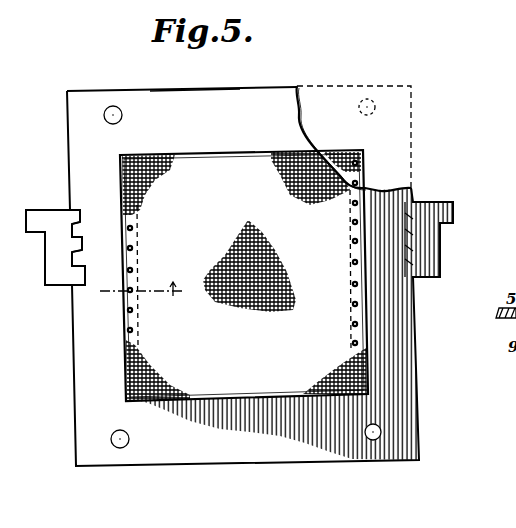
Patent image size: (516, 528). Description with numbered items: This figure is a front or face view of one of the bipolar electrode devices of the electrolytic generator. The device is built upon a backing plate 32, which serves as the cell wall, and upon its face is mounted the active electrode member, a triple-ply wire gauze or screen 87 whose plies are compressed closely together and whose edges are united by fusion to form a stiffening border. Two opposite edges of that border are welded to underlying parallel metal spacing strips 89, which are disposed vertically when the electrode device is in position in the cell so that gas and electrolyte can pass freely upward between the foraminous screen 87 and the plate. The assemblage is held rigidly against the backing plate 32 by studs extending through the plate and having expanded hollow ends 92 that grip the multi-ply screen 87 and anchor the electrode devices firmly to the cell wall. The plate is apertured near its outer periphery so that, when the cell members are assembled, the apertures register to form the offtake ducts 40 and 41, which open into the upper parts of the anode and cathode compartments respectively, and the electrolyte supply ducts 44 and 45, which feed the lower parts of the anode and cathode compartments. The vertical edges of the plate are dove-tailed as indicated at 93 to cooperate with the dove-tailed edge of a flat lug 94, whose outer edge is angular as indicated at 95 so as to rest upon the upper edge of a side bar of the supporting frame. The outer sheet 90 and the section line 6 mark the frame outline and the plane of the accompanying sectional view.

The section line 6- 6 is at (139, 292).
The backing plate 32 is at (182, 102).
The offtake duct 40 is at (113, 106).
The offtake duct 41 is at (370, 99).
The electrolyte supply duct 44 is at (375, 443).
The electrolyte supply duct 45 is at (122, 452).
The wire gauze or screen 87 is at (338, 152).
The spacing strips 89 is at (358, 196).
The outer frame sheet 90 is at (85, 380).
The expanded hollow ends 92 is at (126, 187).
The dove-tailed edges 93 is at (84, 218).
The flat lug 94 is at (33, 218).
The angular outer edge 95 is at (33, 236).